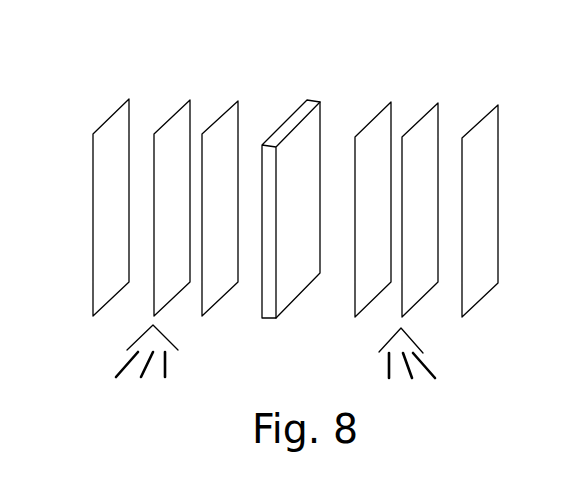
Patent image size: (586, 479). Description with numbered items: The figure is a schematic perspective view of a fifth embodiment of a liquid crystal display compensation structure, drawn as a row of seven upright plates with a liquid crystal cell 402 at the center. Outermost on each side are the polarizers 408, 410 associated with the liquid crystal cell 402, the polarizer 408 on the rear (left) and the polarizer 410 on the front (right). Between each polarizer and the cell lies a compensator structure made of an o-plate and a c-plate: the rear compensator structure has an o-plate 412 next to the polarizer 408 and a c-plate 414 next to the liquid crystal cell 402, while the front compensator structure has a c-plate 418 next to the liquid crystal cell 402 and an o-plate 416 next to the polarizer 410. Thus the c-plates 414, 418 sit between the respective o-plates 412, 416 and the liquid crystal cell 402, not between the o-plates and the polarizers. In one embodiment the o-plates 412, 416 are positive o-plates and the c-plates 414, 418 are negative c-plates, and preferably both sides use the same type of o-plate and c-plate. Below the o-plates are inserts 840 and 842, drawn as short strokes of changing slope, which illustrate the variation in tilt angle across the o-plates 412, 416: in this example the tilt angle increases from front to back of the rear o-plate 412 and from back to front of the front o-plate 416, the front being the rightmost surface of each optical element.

The liquid crystal cell 402 is at (320, 102).
The polarizer 408 is at (129, 99).
The polarizer 410 is at (498, 105).
The o-plate 412 is at (190, 100).
The c-plate 414 is at (238, 101).
The o-plate 416 is at (438, 103).
The c-plate 418 is at (391, 102).
The insert 840 is at (116, 362).
The insert 842 is at (437, 367).